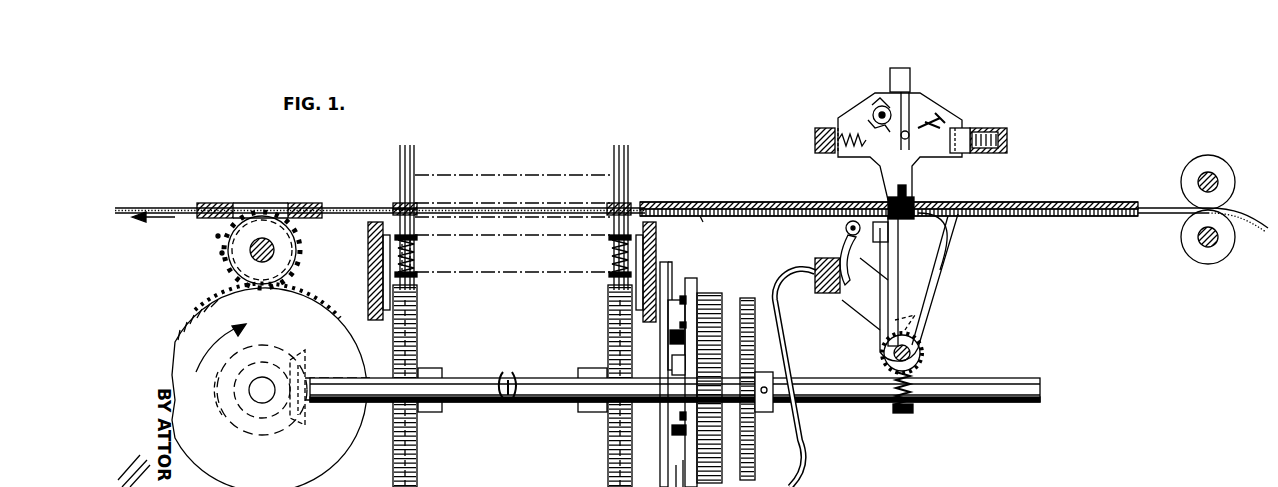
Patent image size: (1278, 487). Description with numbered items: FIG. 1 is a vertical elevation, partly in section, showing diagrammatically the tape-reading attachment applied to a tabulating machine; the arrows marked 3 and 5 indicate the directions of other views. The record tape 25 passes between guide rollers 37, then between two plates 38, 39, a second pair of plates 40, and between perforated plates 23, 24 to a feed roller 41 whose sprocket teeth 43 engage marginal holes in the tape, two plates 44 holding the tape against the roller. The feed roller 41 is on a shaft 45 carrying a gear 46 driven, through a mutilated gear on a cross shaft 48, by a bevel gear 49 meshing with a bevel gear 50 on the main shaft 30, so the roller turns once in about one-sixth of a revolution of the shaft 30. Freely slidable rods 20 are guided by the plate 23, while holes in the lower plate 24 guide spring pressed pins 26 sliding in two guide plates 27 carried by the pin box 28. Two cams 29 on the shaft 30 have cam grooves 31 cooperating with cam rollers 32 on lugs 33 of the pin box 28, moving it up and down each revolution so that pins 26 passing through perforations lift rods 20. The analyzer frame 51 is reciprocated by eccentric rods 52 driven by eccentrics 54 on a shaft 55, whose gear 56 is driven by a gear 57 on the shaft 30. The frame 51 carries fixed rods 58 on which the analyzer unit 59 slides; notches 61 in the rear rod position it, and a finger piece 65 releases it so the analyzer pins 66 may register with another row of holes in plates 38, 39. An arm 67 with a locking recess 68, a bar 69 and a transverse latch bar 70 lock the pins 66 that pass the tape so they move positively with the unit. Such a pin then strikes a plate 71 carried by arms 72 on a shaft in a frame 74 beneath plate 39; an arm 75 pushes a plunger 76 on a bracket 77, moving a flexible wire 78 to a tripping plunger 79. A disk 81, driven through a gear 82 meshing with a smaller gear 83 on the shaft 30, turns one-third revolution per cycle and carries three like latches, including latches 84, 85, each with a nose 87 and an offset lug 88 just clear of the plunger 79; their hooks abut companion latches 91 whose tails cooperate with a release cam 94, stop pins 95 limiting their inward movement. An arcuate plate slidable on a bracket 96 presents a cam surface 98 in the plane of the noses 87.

The section line 3 is at (457, 93).
The section line 5 is at (815, 48).
The slidable rods 20 is at (415, 155).
The perforated plate 23 is at (418, 208).
The perforated plate 24 is at (418, 214).
The record tape 25 is at (354, 208).
The spring pressed pins 26 is at (611, 256).
The guide plates 27 is at (417, 240).
The vertically reciprocable frame (pin box) 28 is at (383, 252).
The cams 29 is at (608, 303).
The main shaft 30 is at (535, 403).
The cam grooves 31 is at (410, 357).
The cam rollers 32 is at (410, 326).
The lugs 33 is at (383, 322).
The guide rollers 37 is at (1228, 232).
The plate 38 is at (1096, 203).
The plate 39 is at (1093, 216).
The second pair of plates 40 is at (726, 216).
The feed roller 41 is at (266, 228).
The sprocket teeth 43 is at (220, 252).
The plates 44 is at (222, 203).
The shaft 45 is at (258, 252).
The gear 46 is at (296, 202).
The cross shaft 48 is at (262, 392).
The bevel gear 49 is at (224, 404).
The bevel gear 50 is at (297, 425).
The frame 51 is at (1008, 144).
The eccentric rods 52 is at (930, 322).
The eccentrics 54 is at (920, 318).
The shaft 55 is at (912, 352).
The gear 56 is at (915, 356).
The gear 57 is at (902, 414).
The fixed parallel rods 58 is at (985, 153).
The analyzer unit 59 is at (945, 150).
The notches 61 is at (984, 130).
The finger piece 65 is at (900, 78).
The analyzer pins 66 is at (914, 192).
The arm 67 is at (912, 98).
The locking recess 68 is at (870, 118).
The bar 69 is at (880, 106).
The transverse latch bar 70 is at (876, 132).
The plate 71 is at (945, 262).
The arms 72 is at (904, 243).
The frame 74 is at (925, 285).
The arm 75 is at (850, 300).
The plunger 76 is at (826, 294).
The bracket 77 is at (840, 258).
The flexible wire 78 is at (790, 368).
The tripping plunger 79 is at (846, 228).
The disk 81 is at (710, 293).
The gear 82 is at (755, 345).
The gear 83 is at (758, 420).
The latch 84 is at (697, 352).
The latch 85 is at (690, 442).
The nose 87 is at (688, 425).
The lug 88 is at (684, 300).
The latches 91 is at (709, 222).
The release cam 94 is at (666, 370).
The stop pin 95 is at (688, 322).
The bracket 96 is at (672, 268).
The cam surface 98 is at (694, 280).